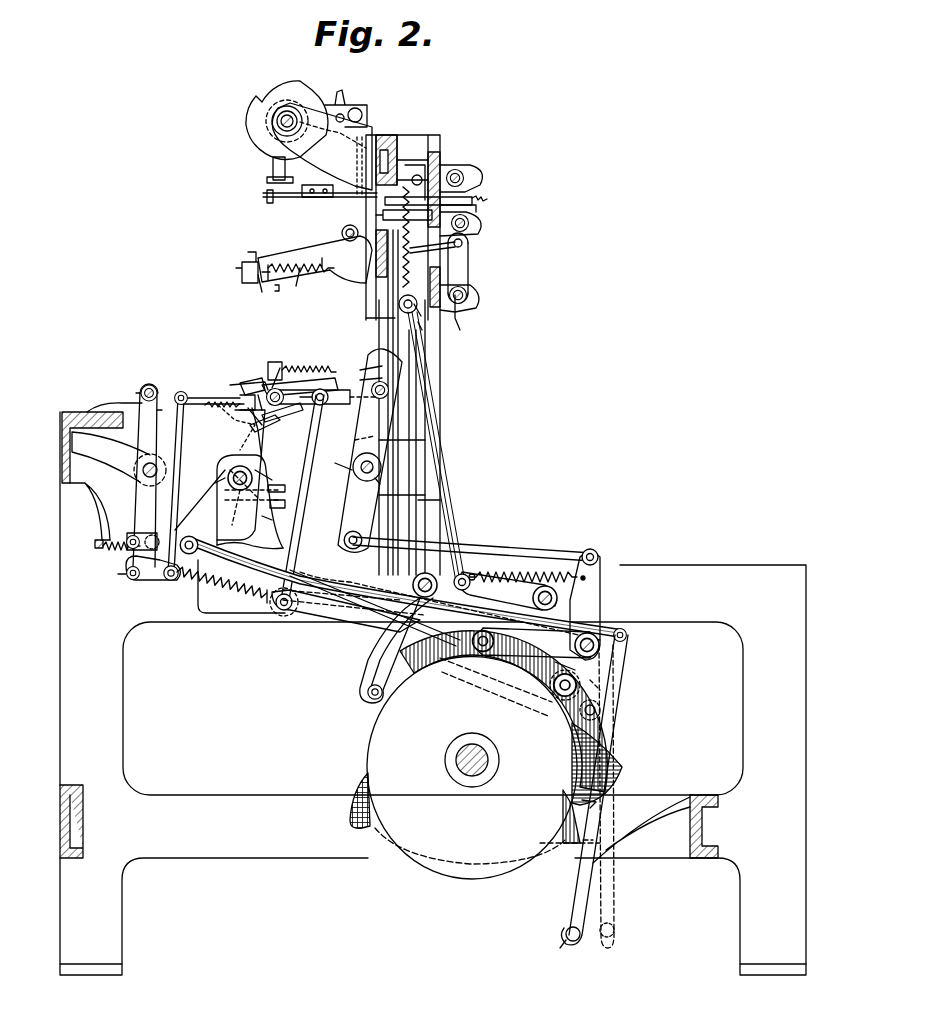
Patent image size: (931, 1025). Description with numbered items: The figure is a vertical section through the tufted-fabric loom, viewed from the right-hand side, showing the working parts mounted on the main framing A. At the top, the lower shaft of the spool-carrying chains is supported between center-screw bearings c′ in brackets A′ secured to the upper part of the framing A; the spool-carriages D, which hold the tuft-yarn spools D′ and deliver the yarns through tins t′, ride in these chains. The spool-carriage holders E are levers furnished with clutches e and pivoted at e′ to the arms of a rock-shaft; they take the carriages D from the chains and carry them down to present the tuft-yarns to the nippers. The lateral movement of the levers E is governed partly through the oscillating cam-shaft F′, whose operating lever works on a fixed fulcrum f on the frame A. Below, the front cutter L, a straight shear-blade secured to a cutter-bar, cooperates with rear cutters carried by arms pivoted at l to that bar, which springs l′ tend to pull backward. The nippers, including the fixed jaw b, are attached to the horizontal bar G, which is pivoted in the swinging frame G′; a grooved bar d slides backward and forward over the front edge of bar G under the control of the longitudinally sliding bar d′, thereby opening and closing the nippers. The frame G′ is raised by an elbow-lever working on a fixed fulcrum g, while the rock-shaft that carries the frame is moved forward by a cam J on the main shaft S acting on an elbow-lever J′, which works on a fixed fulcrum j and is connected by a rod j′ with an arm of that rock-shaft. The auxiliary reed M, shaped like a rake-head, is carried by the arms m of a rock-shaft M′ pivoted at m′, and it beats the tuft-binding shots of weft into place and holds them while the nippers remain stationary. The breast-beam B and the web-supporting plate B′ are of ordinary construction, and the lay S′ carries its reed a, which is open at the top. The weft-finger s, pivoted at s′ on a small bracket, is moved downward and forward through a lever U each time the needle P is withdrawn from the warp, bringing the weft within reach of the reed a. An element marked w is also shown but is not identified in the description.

The main framing A is at (432, 355).
The center-screw bearings c′ is at (287, 120).
The brackets A′ is at (322, 140).
The pivots e′ is at (365, 166).
The tuft-yarn spools D′ is at (270, 176).
The spool-carriages D is at (262, 195).
The pin t′ is at (254, 206).
The clutches e is at (297, 203).
The spool-carriage holders E is at (389, 207).
The oscillating cam-shaft F′ is at (412, 173).
The fixed fulcrum f is at (432, 244).
The front cutter L is at (259, 287).
The pivots l is at (267, 283).
The springs l′ is at (301, 280).
The horizontal bar G is at (268, 366).
The swinging frame G′ is at (309, 360).
The grooved bar d is at (243, 387).
The sliding bar d′ is at (300, 389).
The arms m is at (219, 392).
The auxiliary reed M is at (238, 384).
The pivot s′ is at (224, 427).
The weft-finger s is at (249, 437).
The nipper jaw b is at (253, 426).
The reed a is at (266, 424).
The needle P is at (250, 497).
The lay S′ is at (268, 467).
The lever U is at (279, 497).
The screw w is at (261, 518).
The web-supporting plate B′ is at (186, 508).
The breast-beam B is at (62, 444).
The rock-shaft M′ is at (151, 384).
The pivots m′ is at (128, 385).
The fixed fulcrum g is at (427, 579).
The rod j′ is at (470, 560).
The elbow-lever J′ is at (536, 604).
The fixed fulcrum j is at (590, 658).
The cam J is at (472, 767).
The main shaft S is at (462, 768).